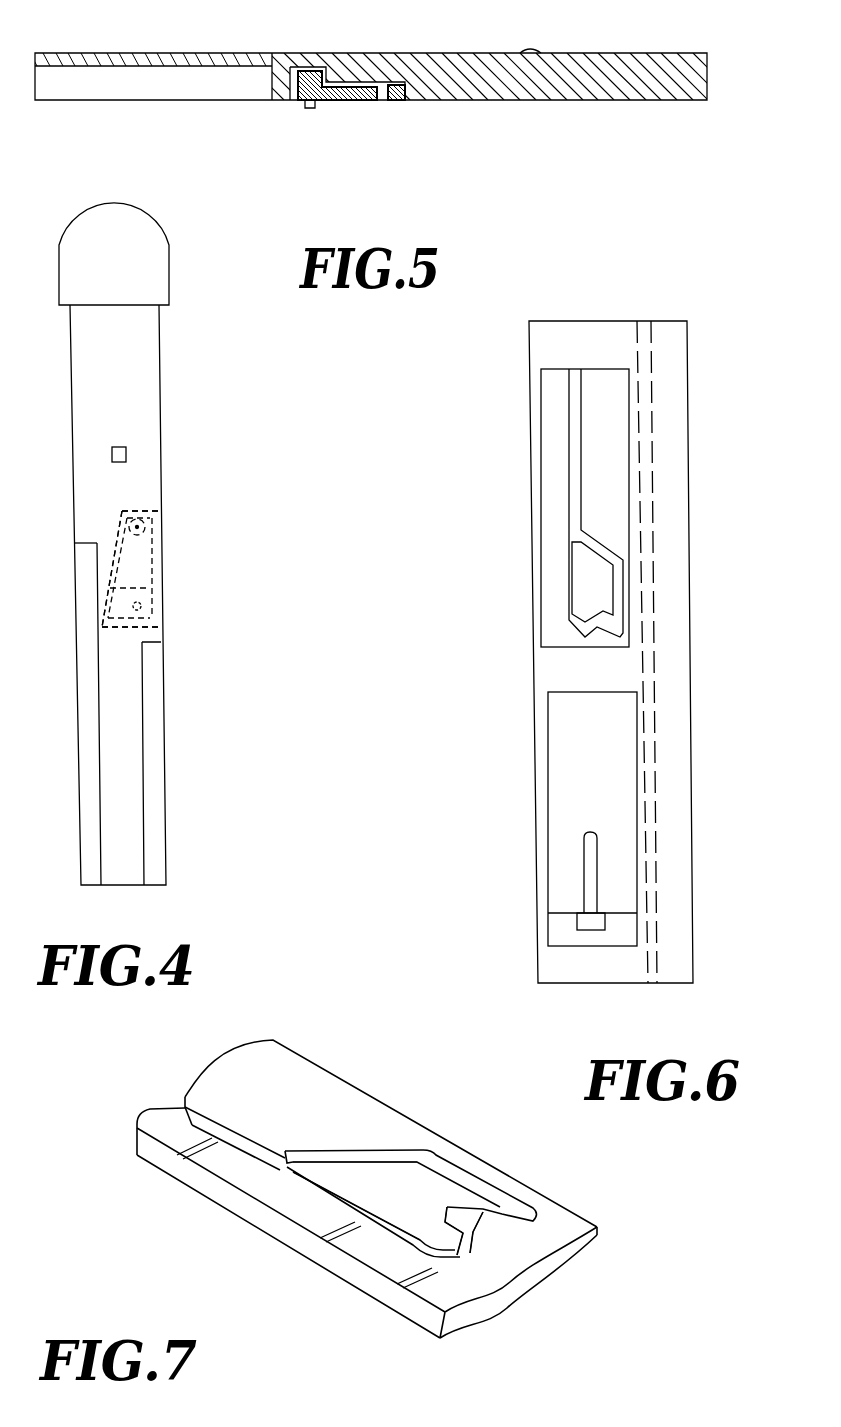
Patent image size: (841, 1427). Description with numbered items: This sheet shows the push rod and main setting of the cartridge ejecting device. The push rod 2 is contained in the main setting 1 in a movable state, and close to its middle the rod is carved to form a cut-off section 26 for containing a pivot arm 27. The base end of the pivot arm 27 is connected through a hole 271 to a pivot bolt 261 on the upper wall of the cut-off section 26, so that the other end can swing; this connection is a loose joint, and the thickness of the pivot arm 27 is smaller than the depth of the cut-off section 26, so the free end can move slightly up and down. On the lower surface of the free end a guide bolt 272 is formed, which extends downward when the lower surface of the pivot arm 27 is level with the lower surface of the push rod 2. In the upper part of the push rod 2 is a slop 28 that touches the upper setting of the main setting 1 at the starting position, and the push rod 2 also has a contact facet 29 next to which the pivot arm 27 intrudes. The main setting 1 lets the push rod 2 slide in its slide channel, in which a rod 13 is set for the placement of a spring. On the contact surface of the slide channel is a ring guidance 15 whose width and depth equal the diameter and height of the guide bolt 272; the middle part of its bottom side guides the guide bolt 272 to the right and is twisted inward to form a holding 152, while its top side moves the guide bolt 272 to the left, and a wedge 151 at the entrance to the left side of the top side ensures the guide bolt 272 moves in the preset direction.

In FIG. 6, the main setting 1 is at (672, 599).
In FIG. 5, the push rod 2 is at (420, 58).
In FIG. 4, the push rod 2 is at (84, 375).
In FIG. 6, the rod 13 is at (588, 868).
In FIG. 6, the ring guidance 15 is at (548, 567).
In FIG. 7, the ring guidance 15 is at (342, 1110).
In FIG. 7, the wedge 151 is at (292, 1172).
In FIG. 7, the holding 152 is at (449, 1205).
In FIG. 5, the cut-off section 26 is at (338, 102).
In FIG. 4, the cut-off section 26 is at (148, 540).
In FIG. 5, the pivot arm 27 is at (337, 133).
In FIG. 4, the pivot arm 27 is at (162, 569).
In FIG. 5, the slop 28 is at (534, 51).
In FIG. 4, the slop 28 is at (128, 453).
In FIG. 4, the contact facet 29 is at (84, 546).
In FIG. 5, the pivot bolt 261 is at (383, 102).
In FIG. 5, the hole 271 is at (397, 140).
In FIG. 5, the guide bolt 272 is at (311, 108).
In FIG. 4, the guide bolt 272 is at (150, 612).